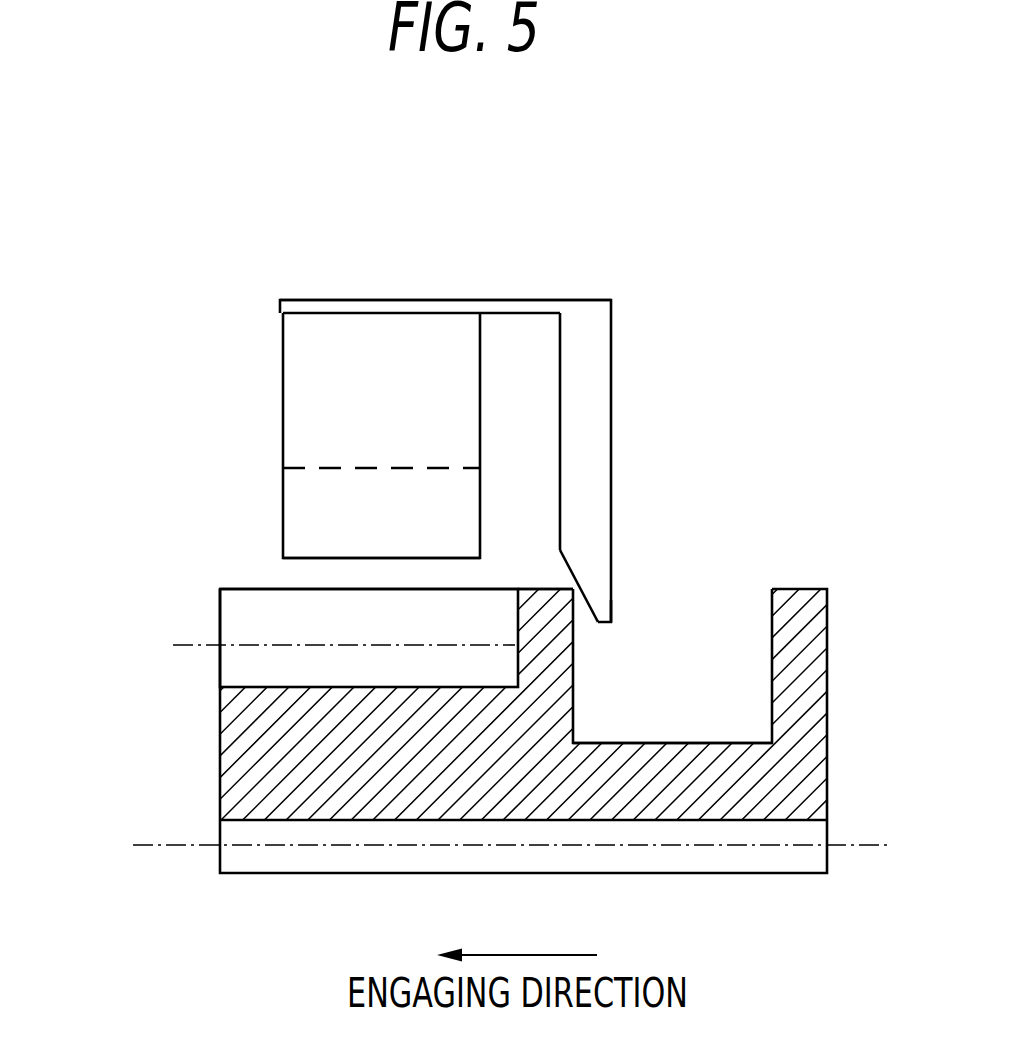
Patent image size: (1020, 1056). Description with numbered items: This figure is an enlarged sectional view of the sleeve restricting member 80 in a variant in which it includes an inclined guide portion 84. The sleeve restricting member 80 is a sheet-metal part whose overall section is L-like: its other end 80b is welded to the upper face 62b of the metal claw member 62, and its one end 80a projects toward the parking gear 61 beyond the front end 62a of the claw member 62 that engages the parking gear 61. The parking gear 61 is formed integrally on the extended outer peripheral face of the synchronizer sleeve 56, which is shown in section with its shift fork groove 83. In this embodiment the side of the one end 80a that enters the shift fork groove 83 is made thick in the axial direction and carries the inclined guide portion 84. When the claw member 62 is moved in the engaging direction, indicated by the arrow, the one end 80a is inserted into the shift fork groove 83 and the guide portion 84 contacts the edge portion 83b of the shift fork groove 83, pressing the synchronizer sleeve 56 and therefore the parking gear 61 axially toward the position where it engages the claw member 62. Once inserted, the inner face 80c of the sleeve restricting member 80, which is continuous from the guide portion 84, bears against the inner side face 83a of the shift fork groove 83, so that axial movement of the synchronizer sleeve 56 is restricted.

The synchronizer sleeve 56 is at (357, 778).
The parking gear 61 is at (250, 673).
The claw member 62 is at (285, 398).
The front end of claw member 62a is at (328, 560).
The upper face of claw member 62b is at (313, 355).
The sleeve restricting member 80 is at (502, 392).
The one end of sleeve restricting member 80a is at (602, 600).
The other end of sleeve restricting member 80b is at (397, 298).
The inner face of sleeve restricting member 80c is at (553, 352).
The shift fork groove 83 is at (734, 612).
The inner side face of shift fork groove 83a is at (577, 713).
The edge portion of shift fork groove 83b is at (572, 586).
The guide portion 84 is at (570, 583).